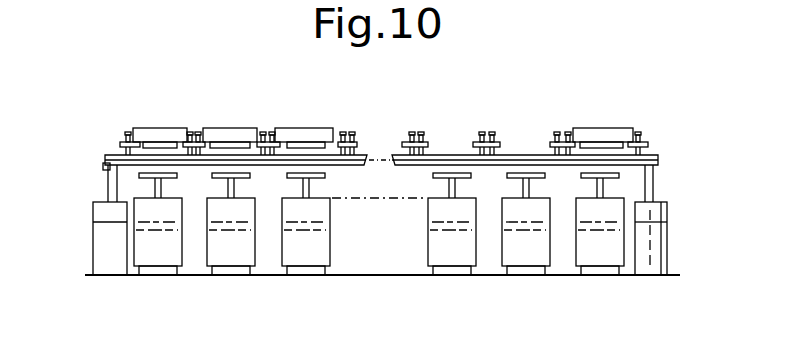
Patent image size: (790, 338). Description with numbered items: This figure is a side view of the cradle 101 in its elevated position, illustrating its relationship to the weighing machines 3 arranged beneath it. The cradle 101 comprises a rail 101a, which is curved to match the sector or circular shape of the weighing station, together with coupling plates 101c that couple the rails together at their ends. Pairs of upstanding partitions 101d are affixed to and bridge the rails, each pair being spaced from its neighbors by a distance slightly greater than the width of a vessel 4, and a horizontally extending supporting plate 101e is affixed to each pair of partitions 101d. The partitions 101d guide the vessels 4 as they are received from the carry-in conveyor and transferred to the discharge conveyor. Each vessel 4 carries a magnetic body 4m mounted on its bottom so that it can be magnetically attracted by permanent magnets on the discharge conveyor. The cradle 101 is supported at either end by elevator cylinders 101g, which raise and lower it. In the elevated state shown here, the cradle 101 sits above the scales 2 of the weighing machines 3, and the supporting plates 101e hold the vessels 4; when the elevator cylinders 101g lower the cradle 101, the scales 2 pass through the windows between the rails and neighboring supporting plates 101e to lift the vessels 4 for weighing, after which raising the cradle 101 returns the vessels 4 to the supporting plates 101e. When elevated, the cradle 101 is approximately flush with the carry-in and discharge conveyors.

The cradle 101 is at (446, 139).
The rail 101a is at (105, 160).
The coupling plate 101c is at (120, 144).
The upstanding partition 101d is at (128, 132).
The supporting plate 101e is at (203, 142).
The elevator cylinder 101g is at (93, 249).
The scale 2 is at (177, 178).
The weighing machine 3 is at (168, 268).
The vessel 4 is at (160, 128).
The magnetic body 4m is at (168, 146).